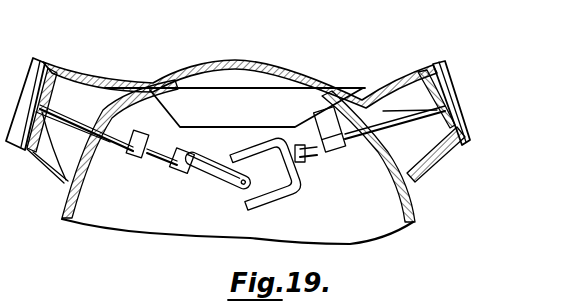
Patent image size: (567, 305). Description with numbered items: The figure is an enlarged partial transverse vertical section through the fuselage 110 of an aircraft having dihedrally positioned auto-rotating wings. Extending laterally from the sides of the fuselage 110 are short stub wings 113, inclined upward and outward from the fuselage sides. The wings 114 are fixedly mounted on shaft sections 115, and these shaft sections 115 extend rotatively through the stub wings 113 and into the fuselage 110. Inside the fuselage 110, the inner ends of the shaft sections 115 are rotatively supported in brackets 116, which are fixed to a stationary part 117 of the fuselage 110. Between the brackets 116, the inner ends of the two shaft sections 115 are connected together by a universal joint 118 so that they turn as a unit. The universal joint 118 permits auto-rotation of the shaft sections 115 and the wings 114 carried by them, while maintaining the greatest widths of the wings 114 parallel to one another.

The fuselage 110 is at (415, 221).
The stub wings 113 is at (73, 77).
The wings 114 is at (438, 70).
The shaft sections 115 is at (77, 118).
The brackets 116 is at (137, 153).
The stationary part 117 is at (258, 97).
The universal joint 118 is at (217, 178).